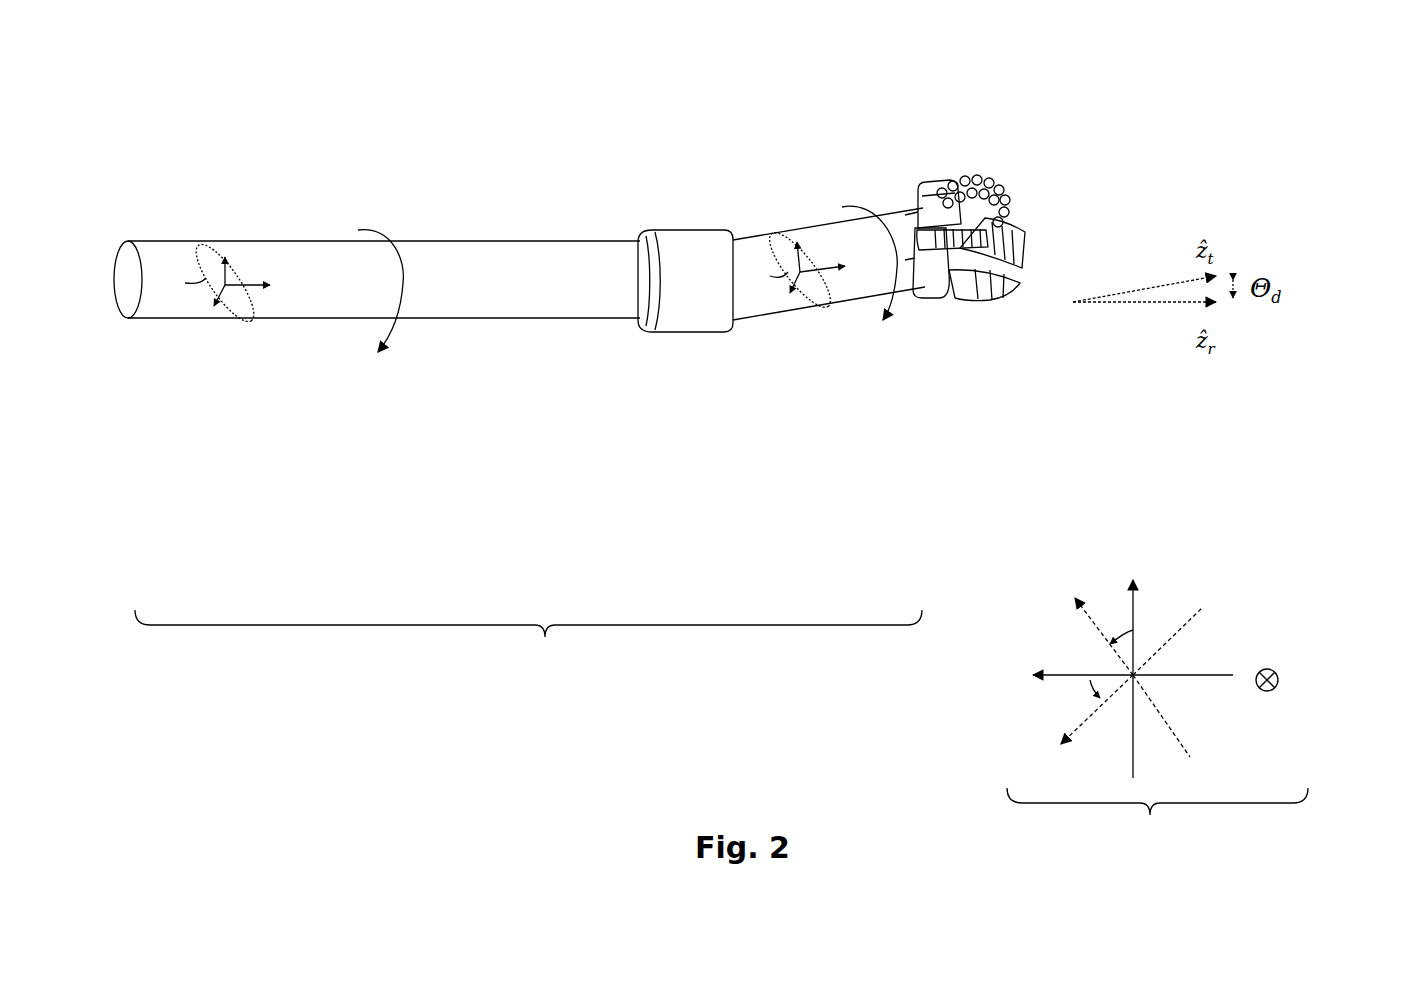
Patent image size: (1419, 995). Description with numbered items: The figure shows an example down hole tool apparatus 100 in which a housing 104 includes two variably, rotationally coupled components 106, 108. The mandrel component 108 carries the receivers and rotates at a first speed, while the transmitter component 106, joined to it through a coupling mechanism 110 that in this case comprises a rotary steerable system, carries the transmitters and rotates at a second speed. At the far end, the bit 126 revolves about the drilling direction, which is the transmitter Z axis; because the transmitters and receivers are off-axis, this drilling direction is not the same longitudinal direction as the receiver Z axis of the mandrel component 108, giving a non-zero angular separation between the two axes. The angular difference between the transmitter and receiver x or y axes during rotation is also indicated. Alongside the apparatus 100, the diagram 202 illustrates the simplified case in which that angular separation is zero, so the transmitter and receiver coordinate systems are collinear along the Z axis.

The housing 104 is at (613, 87).
The rotationally coupled component 106 is at (877, 183).
The mandrel component 108 is at (478, 236).
The coupling mechanism 110 is at (680, 333).
The bit 126 is at (960, 190).
The apparatus 100 is at (528, 644).
The diagram 202 is at (1187, 702).